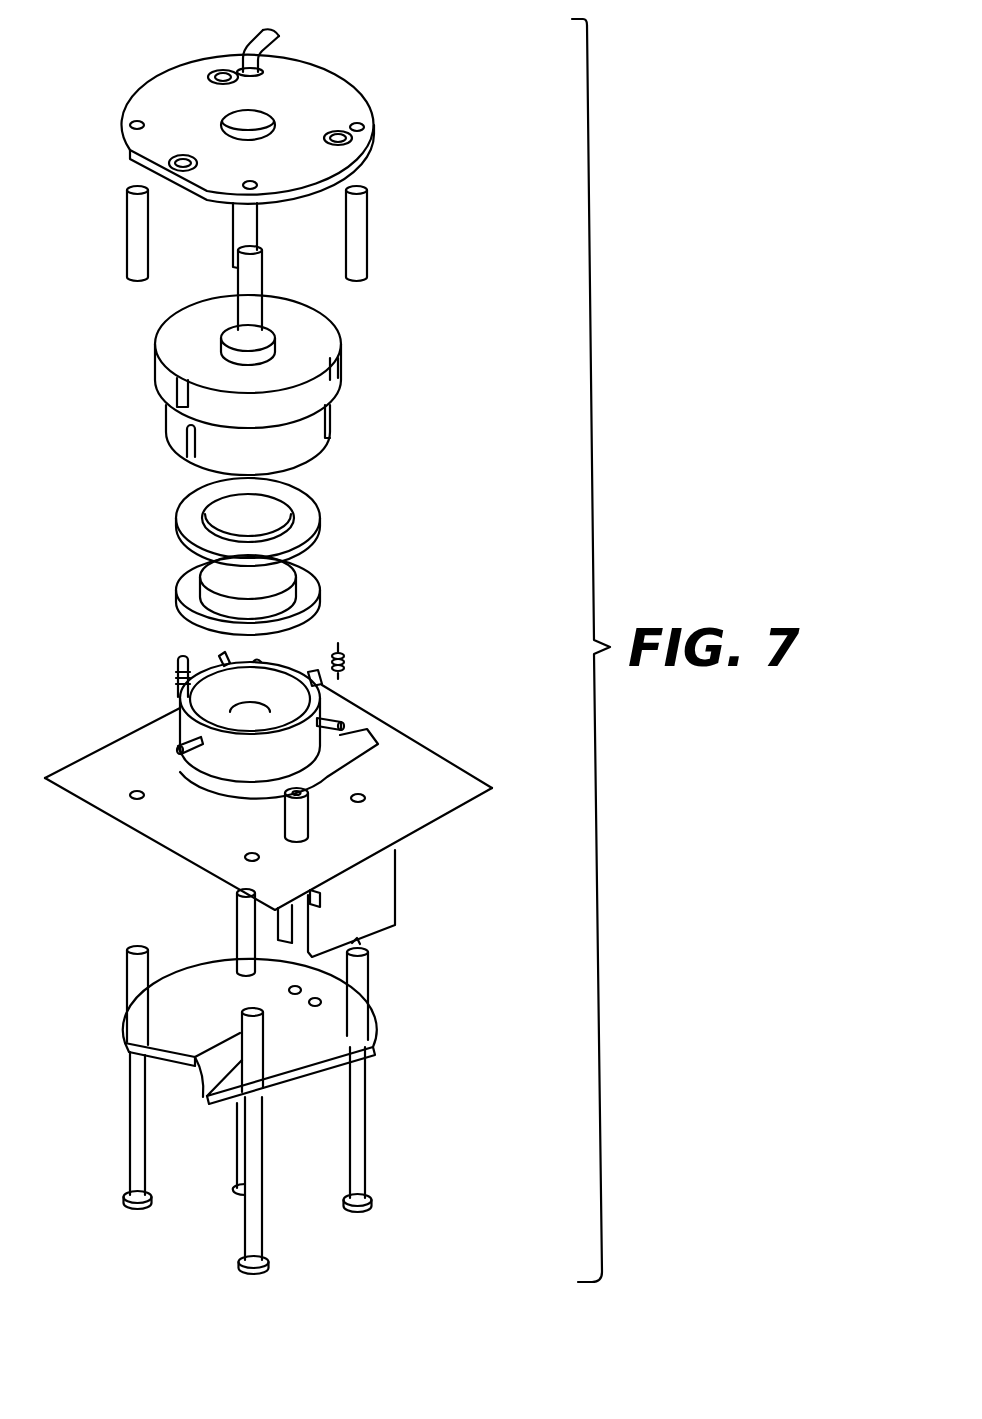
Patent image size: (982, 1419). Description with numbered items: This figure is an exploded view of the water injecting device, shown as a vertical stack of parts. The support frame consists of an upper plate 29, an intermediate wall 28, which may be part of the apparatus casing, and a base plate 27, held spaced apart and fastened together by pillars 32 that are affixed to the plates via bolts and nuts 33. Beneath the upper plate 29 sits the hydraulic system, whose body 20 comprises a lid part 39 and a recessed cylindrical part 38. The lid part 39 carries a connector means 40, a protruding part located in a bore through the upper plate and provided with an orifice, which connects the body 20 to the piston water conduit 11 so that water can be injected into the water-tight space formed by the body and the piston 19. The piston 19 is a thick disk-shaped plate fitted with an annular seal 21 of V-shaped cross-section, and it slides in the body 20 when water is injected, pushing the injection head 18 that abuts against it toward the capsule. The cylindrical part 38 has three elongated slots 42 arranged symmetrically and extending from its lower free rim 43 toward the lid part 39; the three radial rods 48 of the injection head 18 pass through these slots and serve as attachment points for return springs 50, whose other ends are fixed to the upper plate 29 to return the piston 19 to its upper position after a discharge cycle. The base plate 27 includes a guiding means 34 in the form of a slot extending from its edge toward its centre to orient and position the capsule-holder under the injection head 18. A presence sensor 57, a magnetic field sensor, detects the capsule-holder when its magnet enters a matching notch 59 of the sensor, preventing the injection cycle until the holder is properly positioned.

The piston water conduit 11 is at (258, 37).
The upper plate 29 is at (333, 93).
The pillars 32 is at (357, 237).
The lid part 39 is at (315, 332).
The connector means 40 is at (222, 334).
The body 20 is at (275, 380).
The cylindrical part 38 is at (266, 460).
The elongated slots 42 is at (183, 452).
The lower free rim 43 is at (318, 462).
The seal 21 is at (318, 540).
The piston 19 is at (318, 596).
The return springs 50 is at (352, 662).
The injection head 18 is at (333, 717).
The rods 48 is at (350, 712).
The intermediate wall 28 is at (460, 795).
The presence sensor 57 is at (402, 912).
The notch 59 is at (300, 927).
The base plate 27 is at (250, 1067).
The guiding means 34 is at (203, 1047).
The bolts and nuts 33 is at (357, 1122).